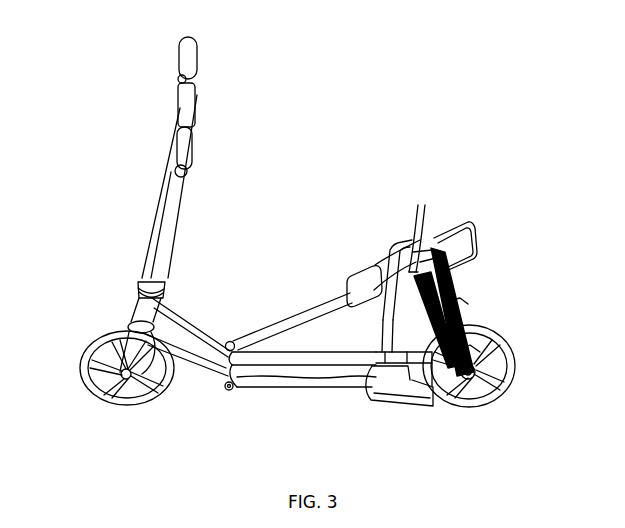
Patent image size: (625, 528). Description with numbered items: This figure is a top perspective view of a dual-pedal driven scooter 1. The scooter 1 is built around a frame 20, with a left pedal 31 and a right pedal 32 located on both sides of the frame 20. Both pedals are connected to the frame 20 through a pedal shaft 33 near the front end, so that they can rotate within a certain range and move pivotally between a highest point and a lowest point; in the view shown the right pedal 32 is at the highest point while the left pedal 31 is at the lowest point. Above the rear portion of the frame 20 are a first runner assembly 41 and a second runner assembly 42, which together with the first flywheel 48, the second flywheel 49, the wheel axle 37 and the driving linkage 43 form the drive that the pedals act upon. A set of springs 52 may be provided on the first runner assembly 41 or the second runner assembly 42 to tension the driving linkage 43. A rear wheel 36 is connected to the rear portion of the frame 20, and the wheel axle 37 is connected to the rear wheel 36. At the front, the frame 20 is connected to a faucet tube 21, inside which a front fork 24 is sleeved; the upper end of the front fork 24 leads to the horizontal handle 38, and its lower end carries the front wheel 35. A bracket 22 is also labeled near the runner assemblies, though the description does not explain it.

The dual-pedal driven scooter 1 is at (496, 161).
The horizontal handle 38 is at (181, 92).
The wheel axle 37 is at (162, 204).
The faucet tube 21 is at (138, 290).
The front fork 24 is at (126, 333).
The front wheel 35 is at (88, 352).
The frame 20 is at (213, 370).
The pedal shaft 33 is at (231, 392).
The left pedal 31 is at (369, 402).
The right pedal 32 is at (361, 272).
The bracket 22 is at (398, 266).
The first runner assembly 41 is at (419, 262).
The second runner assembly 42 is at (437, 232).
The set of springs 52 is at (460, 290).
The driving linkage 43 is at (462, 300).
The second flywheel 49 is at (478, 335).
The rear wheel 36 is at (520, 360).
The first flywheel 48 is at (485, 386).